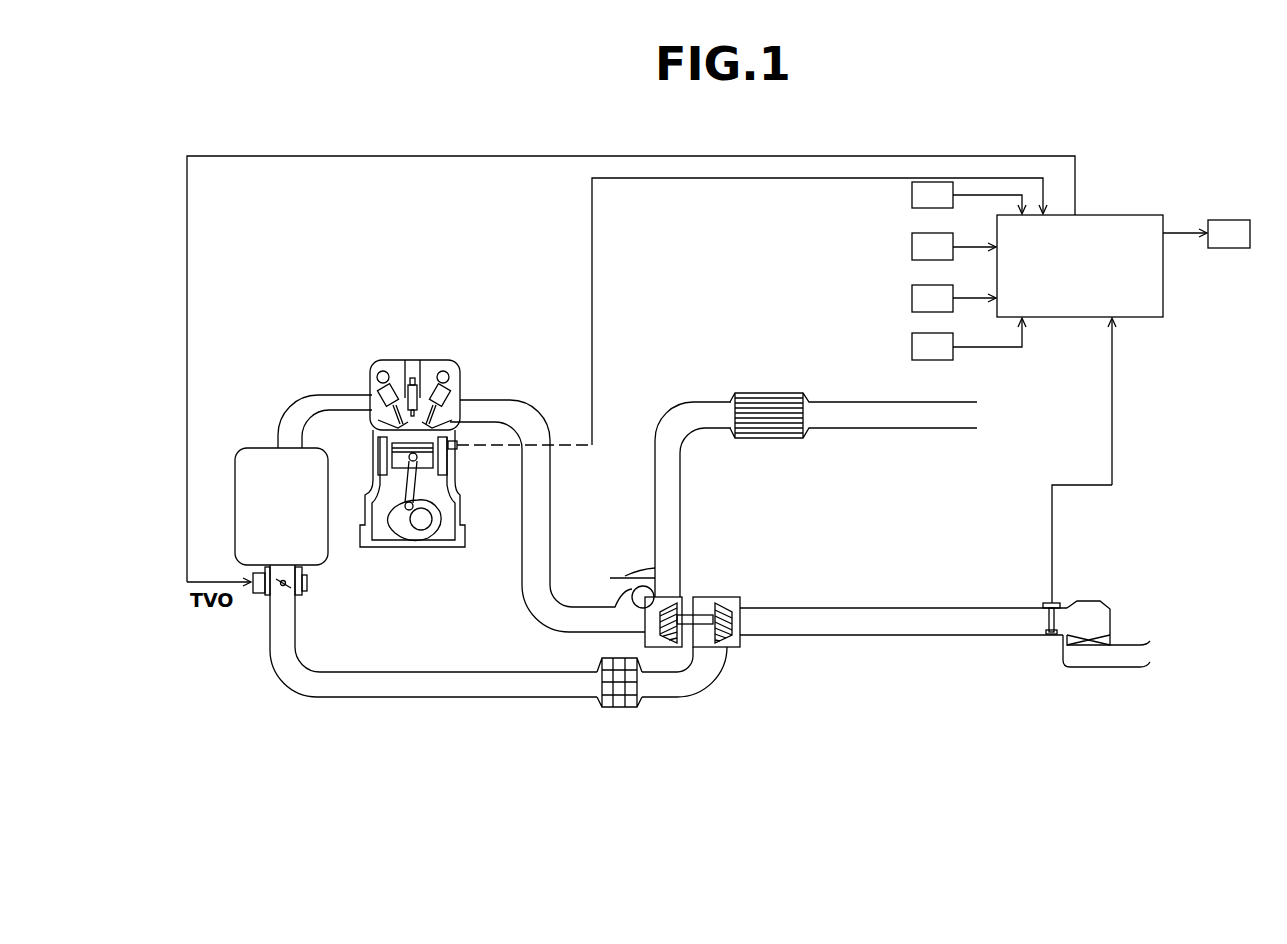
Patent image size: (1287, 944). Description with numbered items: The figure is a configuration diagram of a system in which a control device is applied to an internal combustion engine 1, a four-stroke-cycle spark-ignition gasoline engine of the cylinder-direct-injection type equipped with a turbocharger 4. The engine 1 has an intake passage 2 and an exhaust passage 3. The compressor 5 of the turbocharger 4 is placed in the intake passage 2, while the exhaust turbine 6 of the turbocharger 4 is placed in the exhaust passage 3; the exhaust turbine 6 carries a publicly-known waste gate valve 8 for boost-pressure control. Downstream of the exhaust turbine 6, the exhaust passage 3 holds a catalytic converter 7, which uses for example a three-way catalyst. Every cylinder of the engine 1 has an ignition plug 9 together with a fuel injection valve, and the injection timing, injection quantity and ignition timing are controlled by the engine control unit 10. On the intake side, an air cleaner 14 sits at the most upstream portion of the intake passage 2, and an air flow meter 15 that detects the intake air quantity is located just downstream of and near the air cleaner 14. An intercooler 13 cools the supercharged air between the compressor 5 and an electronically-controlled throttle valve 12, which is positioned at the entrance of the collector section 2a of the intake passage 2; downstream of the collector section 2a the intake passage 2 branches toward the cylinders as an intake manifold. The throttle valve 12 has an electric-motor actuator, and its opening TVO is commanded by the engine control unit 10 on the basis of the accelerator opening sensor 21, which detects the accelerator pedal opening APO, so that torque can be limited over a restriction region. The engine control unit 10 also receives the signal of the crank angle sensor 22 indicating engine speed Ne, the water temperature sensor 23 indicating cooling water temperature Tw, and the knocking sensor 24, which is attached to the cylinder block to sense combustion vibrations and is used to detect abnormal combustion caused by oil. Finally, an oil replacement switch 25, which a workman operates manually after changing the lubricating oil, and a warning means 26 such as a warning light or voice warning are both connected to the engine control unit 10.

The internal combustion engine 1 is at (478, 352).
The intake passage 2 is at (388, 698).
The collector section 2a is at (254, 456).
The exhaust passage 3 is at (553, 478).
The turbocharger 4 is at (692, 597).
The compressor 5 is at (736, 648).
The exhaust turbine 6 is at (660, 648).
The catalytic converter 7 is at (766, 439).
The waste gate valve 8 is at (617, 572).
The ignition plug 9 is at (404, 398).
The engine control unit 10 is at (1123, 226).
The throttle valve 12 is at (289, 592).
The intercooler 13 is at (618, 708).
The air cleaner 14 is at (1092, 637).
The air flow meter 15 is at (1047, 622).
The accelerator opening sensor 21 is at (911, 298).
The crank angle sensor 22 is at (911, 247).
The water temperature sensor 23 is at (911, 195).
The knocking sensor 24 is at (459, 447).
The oil replacement switch 25 is at (911, 347).
The warning means 26 is at (1226, 228).